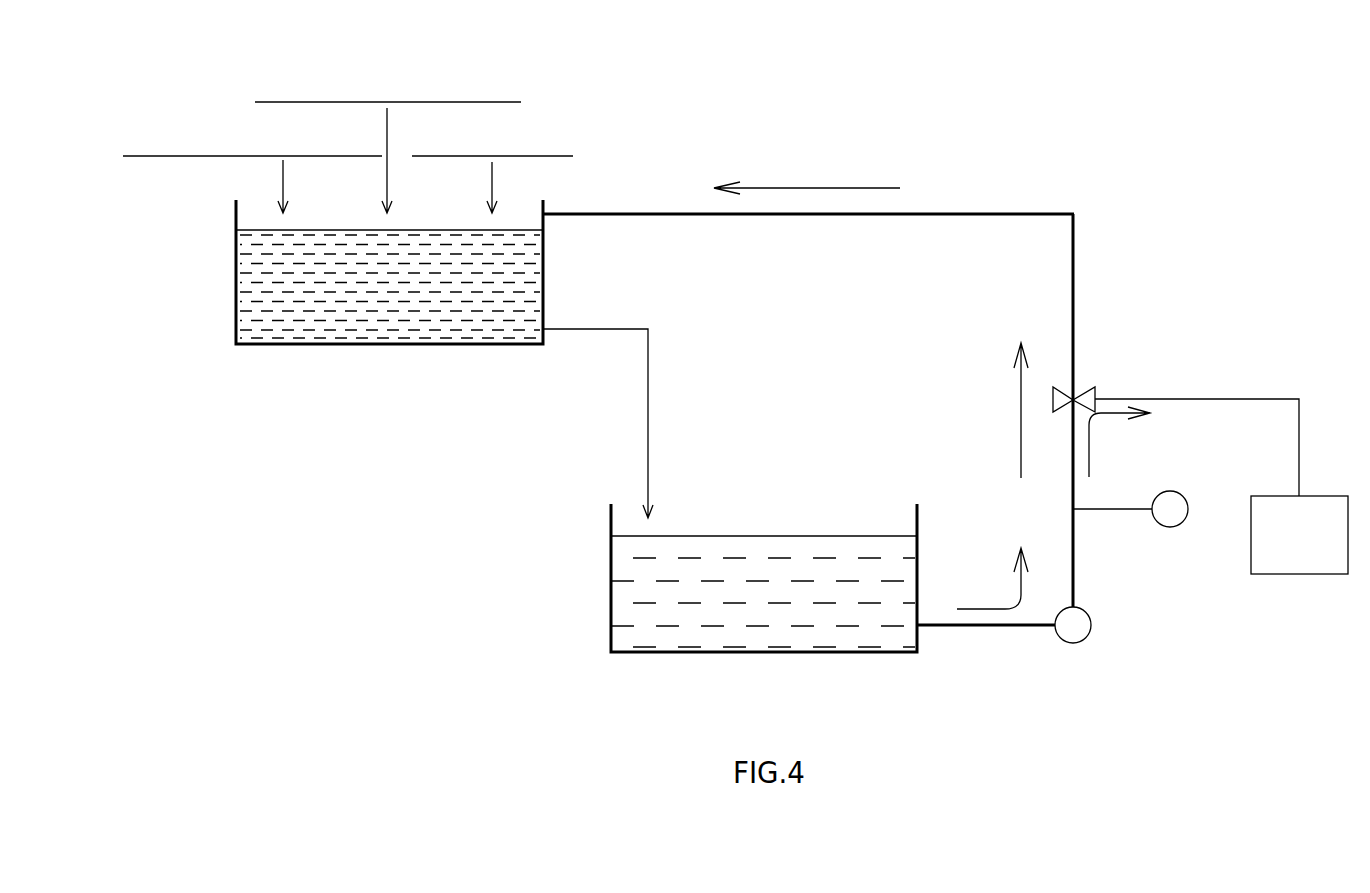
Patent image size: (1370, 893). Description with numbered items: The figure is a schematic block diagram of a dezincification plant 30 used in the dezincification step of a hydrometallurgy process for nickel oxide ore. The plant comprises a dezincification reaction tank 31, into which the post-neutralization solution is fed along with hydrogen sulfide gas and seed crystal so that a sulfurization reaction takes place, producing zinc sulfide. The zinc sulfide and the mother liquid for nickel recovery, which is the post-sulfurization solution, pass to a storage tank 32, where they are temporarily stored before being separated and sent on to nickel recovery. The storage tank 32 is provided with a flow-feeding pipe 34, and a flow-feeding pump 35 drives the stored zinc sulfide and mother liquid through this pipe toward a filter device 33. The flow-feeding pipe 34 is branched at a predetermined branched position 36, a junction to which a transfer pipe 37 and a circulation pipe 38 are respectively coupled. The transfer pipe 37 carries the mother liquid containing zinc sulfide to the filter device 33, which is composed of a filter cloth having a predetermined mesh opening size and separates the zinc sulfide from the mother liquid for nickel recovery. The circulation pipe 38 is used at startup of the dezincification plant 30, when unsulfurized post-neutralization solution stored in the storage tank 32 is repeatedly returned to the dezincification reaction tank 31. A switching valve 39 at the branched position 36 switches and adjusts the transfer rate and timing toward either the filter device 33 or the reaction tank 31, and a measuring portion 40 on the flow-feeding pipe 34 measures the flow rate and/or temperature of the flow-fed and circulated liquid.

The dezincification plant 30 is at (757, 43).
The dezincification reaction tank 31 is at (543, 278).
The storage tank 32 is at (763, 652).
The filter device 33 is at (1325, 496).
The flow-feeding pipe 34 is at (1073, 563).
The flow-feeding pump 35 is at (1091, 625).
The branched position 36 is at (1099, 369).
The transfer pipe 37 is at (1146, 398).
The circulation pipe 38 is at (1073, 248).
The switching valve 39 is at (1066, 392).
The measuring portion 40 is at (1168, 491).